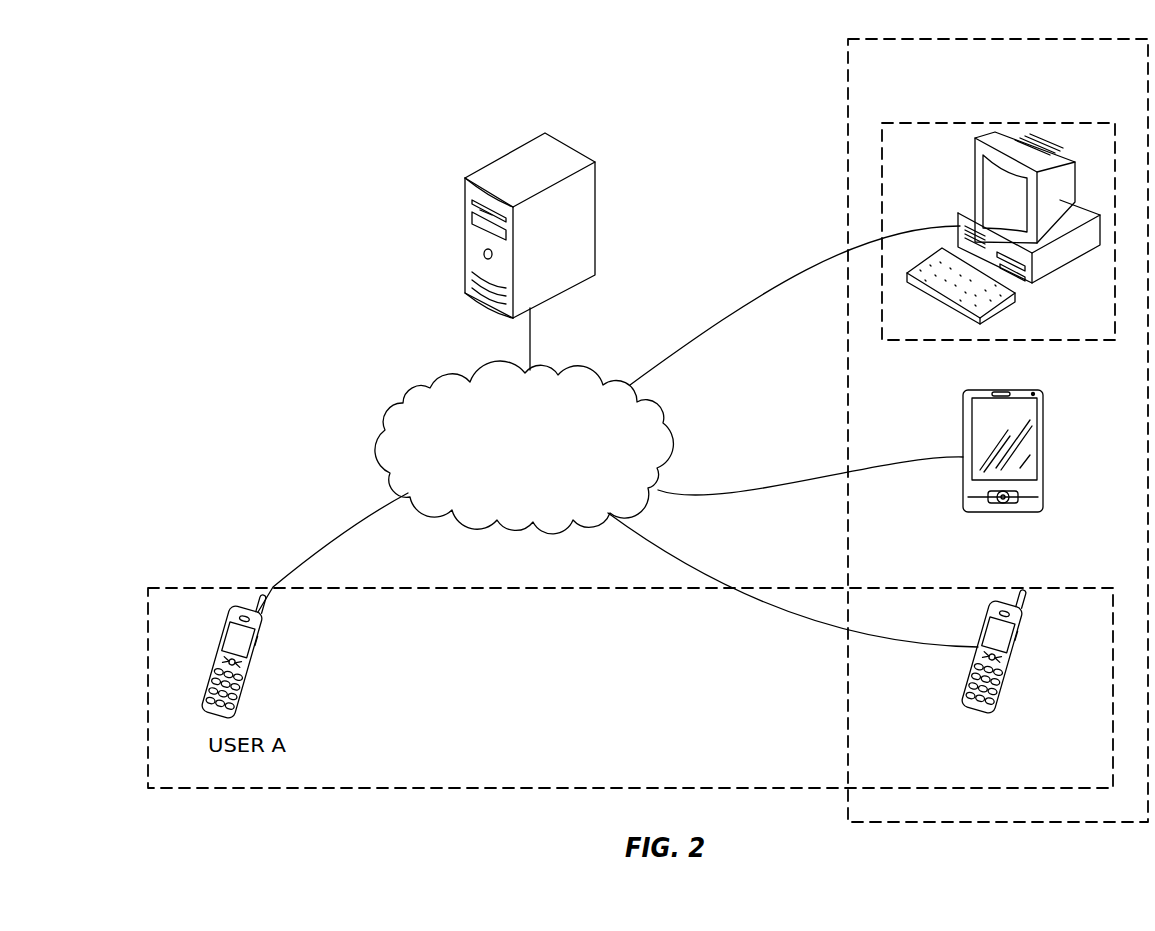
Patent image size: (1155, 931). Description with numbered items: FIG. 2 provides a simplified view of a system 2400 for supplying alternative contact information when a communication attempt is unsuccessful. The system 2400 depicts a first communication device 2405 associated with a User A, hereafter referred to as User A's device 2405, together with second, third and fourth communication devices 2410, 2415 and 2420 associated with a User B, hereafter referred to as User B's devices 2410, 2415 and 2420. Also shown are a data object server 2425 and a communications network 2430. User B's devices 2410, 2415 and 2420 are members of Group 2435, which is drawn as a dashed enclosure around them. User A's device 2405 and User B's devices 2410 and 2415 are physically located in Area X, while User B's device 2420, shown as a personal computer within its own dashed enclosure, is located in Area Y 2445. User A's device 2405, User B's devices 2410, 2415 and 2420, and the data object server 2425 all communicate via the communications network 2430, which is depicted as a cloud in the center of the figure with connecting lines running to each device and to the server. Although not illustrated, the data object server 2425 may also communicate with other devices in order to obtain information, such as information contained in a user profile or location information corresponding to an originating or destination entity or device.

The system 2400 is at (332, 159).
The first communication device 2405 is at (252, 683).
The second communication device 2410 is at (1007, 683).
The third communication device 2415 is at (1007, 512).
The fourth communication device 2420 is at (1042, 278).
The data object server 2425 is at (569, 145).
The communications network 2430 is at (503, 493).
The Group 2435 is at (998, 430).
The Area Y 2445 is at (915, 122).